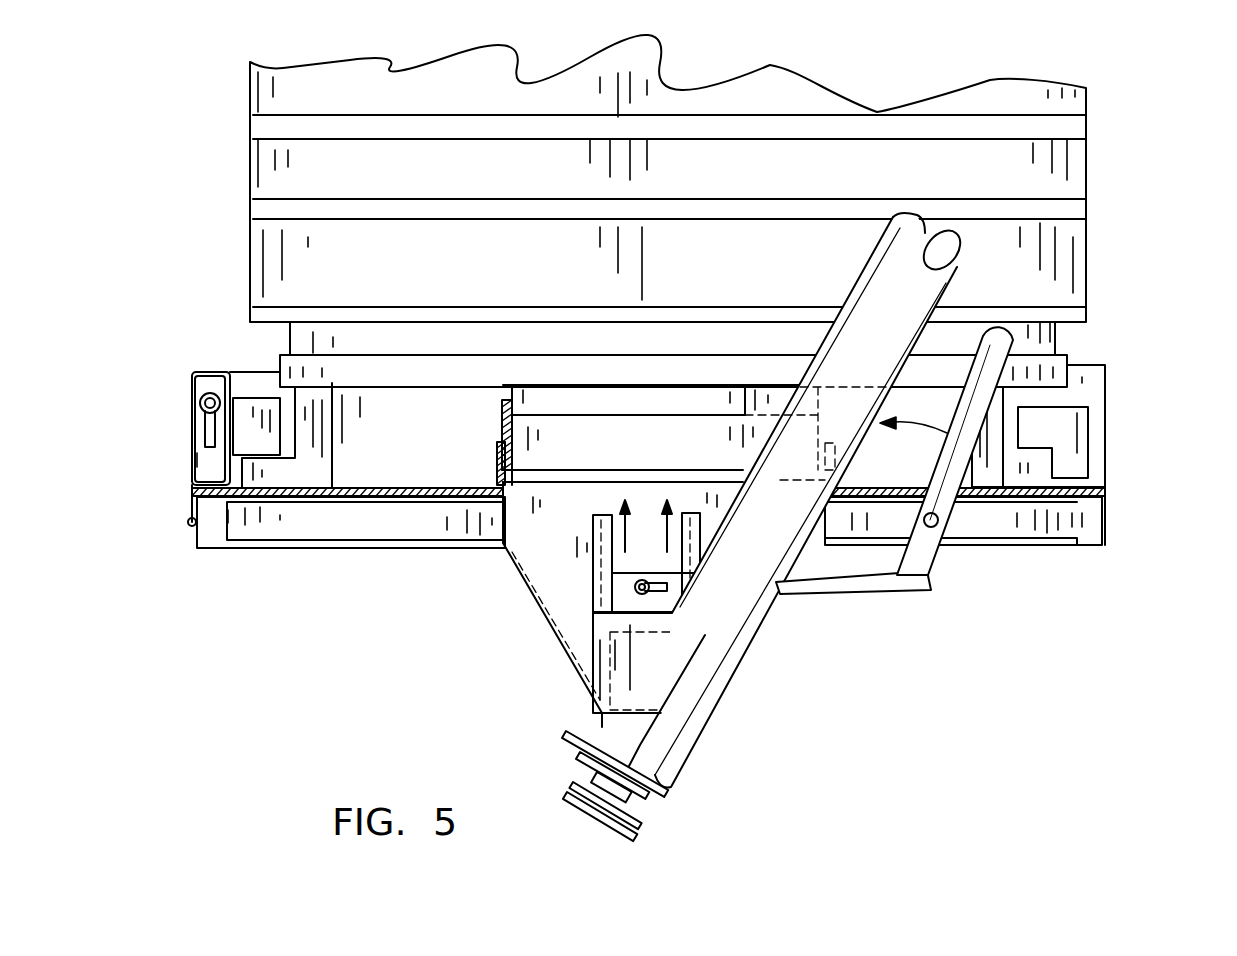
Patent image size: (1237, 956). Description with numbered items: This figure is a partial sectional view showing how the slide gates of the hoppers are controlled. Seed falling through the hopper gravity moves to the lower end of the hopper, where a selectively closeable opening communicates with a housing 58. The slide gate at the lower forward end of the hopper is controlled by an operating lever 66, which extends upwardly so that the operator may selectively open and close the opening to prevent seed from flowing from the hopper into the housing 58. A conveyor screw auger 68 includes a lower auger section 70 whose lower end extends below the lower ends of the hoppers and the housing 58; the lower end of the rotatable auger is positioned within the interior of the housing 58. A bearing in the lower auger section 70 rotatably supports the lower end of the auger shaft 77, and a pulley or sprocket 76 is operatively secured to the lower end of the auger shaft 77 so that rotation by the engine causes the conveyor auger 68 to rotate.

The housing 58 is at (597, 671).
The operating lever 66 is at (987, 377).
The conveyor screw auger 68 is at (744, 613).
The lower auger section 70 is at (913, 314).
The pulley or sprocket 76 is at (640, 822).
The auger shaft 77 is at (650, 773).